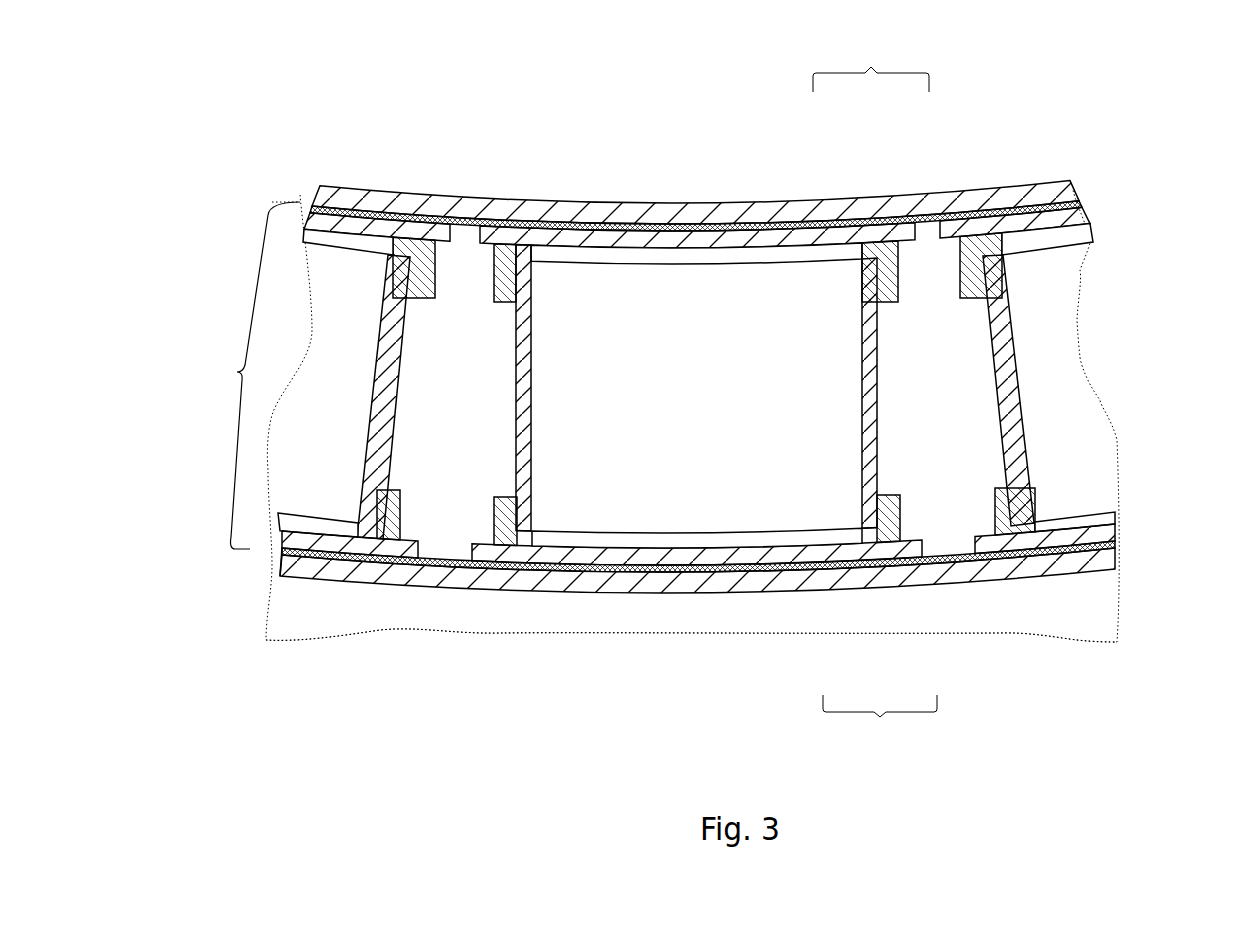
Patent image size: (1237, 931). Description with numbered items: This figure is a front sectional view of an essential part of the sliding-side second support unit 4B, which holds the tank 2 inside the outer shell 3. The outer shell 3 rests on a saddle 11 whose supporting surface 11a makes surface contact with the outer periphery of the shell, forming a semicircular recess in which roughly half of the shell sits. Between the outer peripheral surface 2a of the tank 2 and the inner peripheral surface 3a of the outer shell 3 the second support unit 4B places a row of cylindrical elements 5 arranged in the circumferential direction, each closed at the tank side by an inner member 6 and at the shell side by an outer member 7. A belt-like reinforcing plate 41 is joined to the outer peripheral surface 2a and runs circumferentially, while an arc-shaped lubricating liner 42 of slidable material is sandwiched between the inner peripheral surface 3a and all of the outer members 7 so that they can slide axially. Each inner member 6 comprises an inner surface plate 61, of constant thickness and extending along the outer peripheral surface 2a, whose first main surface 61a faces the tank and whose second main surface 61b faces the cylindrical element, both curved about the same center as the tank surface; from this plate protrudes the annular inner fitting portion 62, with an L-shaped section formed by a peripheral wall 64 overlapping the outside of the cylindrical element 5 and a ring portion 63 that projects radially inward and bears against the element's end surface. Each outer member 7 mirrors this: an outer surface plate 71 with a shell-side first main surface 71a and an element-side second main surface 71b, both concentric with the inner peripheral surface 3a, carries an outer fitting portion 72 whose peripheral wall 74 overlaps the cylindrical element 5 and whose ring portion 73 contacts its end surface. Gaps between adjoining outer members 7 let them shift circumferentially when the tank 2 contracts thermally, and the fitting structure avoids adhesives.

The tank 2 is at (1036, 197).
The outer peripheral surface of the tank 2a is at (1033, 233).
The outer shell 3 is at (1078, 558).
The inner peripheral surface of the outer shell 3a is at (1080, 542).
The second support unit 4B is at (661, 406).
The cylindrical element 5 is at (347, 305).
The inner member 6 is at (722, 282).
The outer member 7 is at (726, 624).
The saddle 11 is at (1037, 613).
The supporting surface 11a is at (280, 563).
The reinforcing plate 41 is at (447, 232).
The lubricating liner 42 is at (455, 548).
The inner surface plate 61 is at (696, 306).
The first main surface of the inner surface plate 61a is at (630, 280).
The second main surface of the inner surface plate 61b is at (630, 280).
The inner fitting portion 62 is at (901, 278).
The ring portion 63 is at (526, 240).
The peripheral wall 64 is at (494, 282).
The outer surface plate 71 is at (696, 623).
The first main surface of the outer surface plate 71a is at (660, 514).
The second main surface of the outer surface plate 71b is at (660, 514).
The outer fitting portion 72 is at (901, 510).
The ring portion 73 is at (523, 558).
The peripheral wall 74 is at (495, 508).